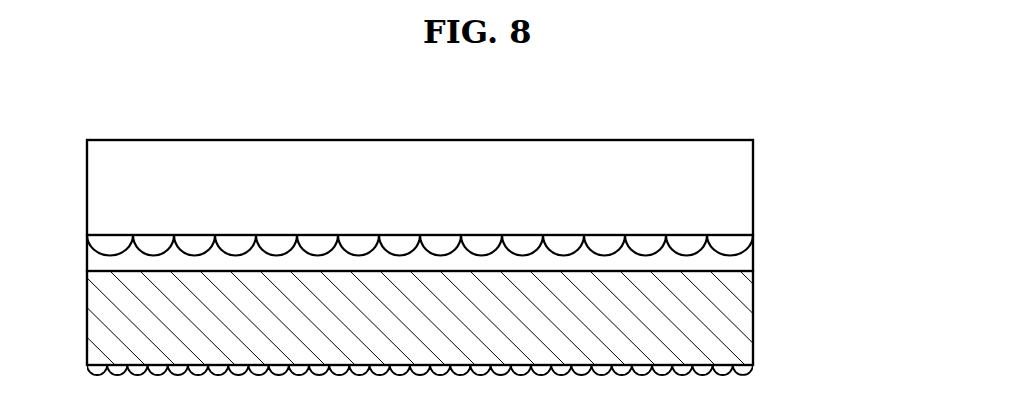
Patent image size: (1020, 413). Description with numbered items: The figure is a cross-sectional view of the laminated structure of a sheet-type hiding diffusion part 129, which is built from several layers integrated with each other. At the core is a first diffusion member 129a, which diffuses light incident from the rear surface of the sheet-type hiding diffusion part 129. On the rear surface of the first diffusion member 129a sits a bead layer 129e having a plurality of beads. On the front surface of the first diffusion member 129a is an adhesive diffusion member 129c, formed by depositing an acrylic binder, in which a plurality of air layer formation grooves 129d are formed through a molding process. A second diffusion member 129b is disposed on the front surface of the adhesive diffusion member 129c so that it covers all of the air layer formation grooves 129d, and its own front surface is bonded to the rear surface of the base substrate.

The sheet-type hiding diffusion part 129 is at (734, 77).
The first diffusion member 129a is at (741, 320).
The second diffusion member 129b is at (741, 187).
The adhesive diffusion member 129c is at (741, 262).
The air layer formation grooves 129d is at (741, 246).
The bead layer 129e is at (747, 375).